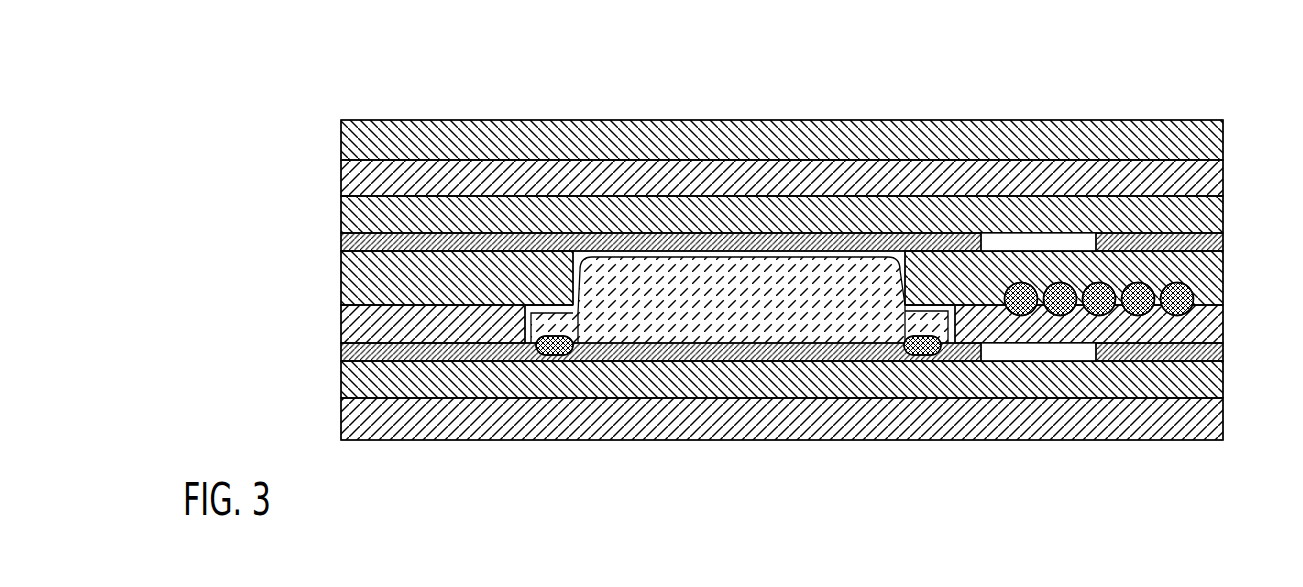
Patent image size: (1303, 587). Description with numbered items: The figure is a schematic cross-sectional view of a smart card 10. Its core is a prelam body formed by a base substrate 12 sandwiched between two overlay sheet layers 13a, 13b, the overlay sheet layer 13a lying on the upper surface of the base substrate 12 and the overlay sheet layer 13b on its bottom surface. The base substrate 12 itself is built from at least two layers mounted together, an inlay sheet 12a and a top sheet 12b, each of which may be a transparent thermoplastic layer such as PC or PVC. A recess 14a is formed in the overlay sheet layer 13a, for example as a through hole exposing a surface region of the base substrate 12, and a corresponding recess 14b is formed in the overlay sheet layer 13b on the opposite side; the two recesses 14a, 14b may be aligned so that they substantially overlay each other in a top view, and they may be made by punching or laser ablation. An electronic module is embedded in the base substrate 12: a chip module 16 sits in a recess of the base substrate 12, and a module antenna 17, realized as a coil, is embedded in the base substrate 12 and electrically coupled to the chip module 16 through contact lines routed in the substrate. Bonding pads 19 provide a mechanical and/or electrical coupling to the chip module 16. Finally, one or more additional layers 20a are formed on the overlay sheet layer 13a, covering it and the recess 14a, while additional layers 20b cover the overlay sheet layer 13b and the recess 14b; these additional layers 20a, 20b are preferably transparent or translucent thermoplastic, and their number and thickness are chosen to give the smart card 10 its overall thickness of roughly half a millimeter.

The smart card 10 is at (368, 75).
The base substrate 12 is at (720, 297).
The inlay sheet 12a is at (333, 270).
The top sheet 12b is at (744, 324).
The overlay sheet layer 13a is at (1216, 229).
The overlay sheet layer 13b is at (1216, 318).
The recess 14a is at (1053, 229).
The recess 14b is at (1048, 351).
The chip module 16 is at (747, 304).
The module antenna 17 is at (1170, 276).
The bonding pads 19 is at (547, 348).
The additional layer 20a is at (333, 206).
The additional layer 20b is at (333, 387).